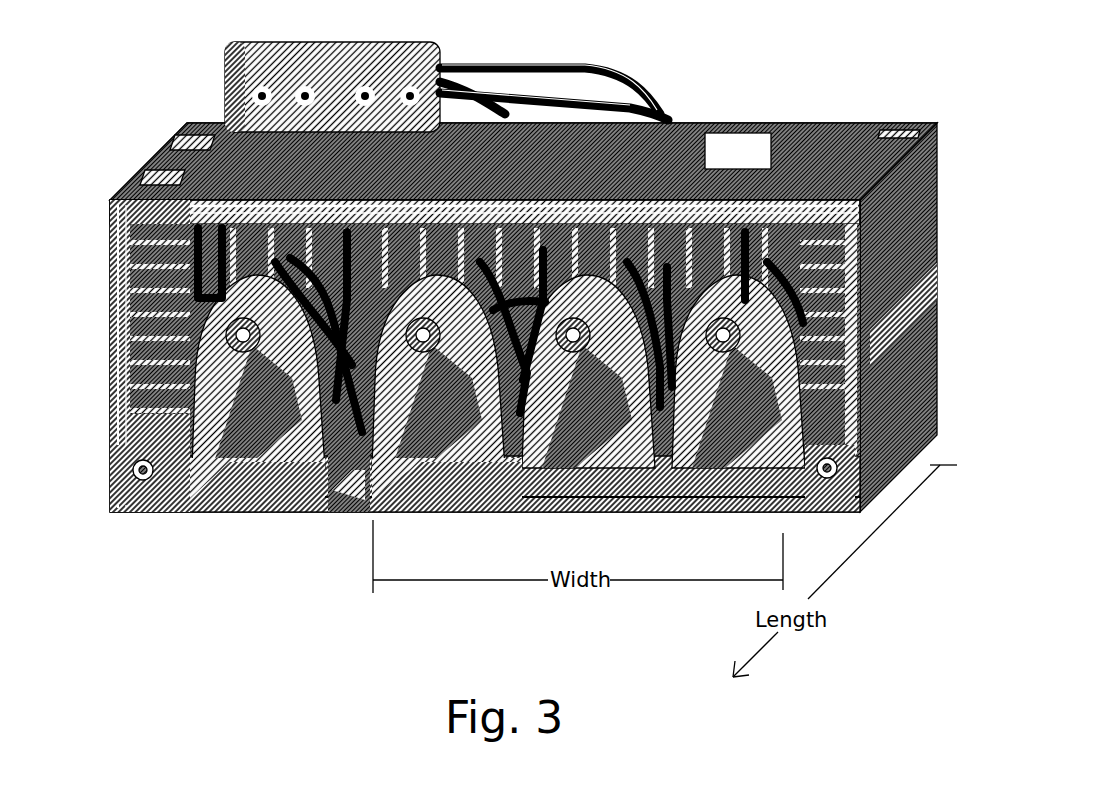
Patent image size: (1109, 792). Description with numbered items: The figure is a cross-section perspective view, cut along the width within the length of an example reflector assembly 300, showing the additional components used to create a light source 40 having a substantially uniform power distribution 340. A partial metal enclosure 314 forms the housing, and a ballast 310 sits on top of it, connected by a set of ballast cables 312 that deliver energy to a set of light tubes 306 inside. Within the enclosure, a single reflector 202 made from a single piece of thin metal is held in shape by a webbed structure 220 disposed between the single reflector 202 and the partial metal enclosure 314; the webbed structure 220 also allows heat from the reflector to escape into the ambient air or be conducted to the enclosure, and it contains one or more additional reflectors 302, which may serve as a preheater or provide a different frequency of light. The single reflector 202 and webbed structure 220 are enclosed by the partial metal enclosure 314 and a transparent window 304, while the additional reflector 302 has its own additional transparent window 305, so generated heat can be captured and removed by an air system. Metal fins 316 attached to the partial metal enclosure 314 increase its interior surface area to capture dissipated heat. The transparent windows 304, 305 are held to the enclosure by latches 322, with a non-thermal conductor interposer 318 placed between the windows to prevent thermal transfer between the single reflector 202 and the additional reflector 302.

The reflector assembly 300 is at (859, 58).
The light source 40 is at (764, 87).
The ballast 310 is at (228, 90).
The ballast cables 312 is at (470, 72).
The partial metal enclosure 314 is at (738, 151).
The metal fins 316 is at (245, 235).
The additional reflector 302 is at (269, 348).
The single reflector 202 is at (438, 348).
The additional transparent window 305 is at (257, 478).
The transparent window 304 is at (447, 478).
The light tubes 306 is at (240, 338).
The webbed structure 220 is at (642, 343).
The non-thermal conductor interposer 318 is at (340, 488).
The latches 322 is at (143, 488).
The uniform power distribution 340 is at (626, 530).